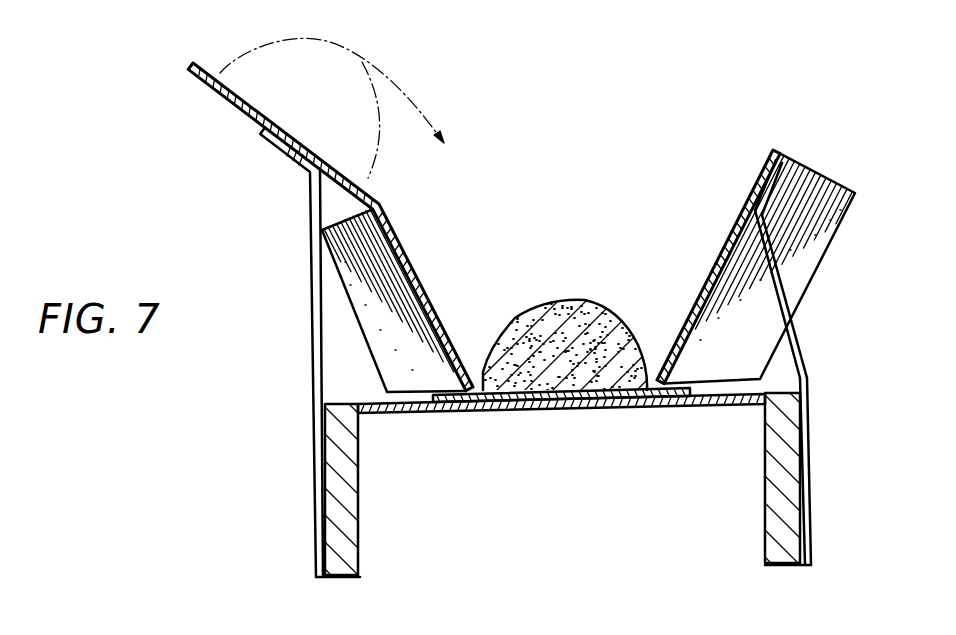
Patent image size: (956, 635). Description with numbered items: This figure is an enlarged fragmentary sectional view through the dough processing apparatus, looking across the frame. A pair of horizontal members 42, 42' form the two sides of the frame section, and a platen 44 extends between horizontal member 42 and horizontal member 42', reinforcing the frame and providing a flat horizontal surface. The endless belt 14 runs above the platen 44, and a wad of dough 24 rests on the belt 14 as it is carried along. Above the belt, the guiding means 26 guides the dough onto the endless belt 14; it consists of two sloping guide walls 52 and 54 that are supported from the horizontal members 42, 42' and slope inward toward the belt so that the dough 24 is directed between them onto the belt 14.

The endless belt 14 is at (443, 401).
The wads of dough 24 is at (602, 297).
The guiding means 26 is at (330, 307).
The horizontal member 42 is at (303, 491).
The horizontal member 42' is at (806, 376).
The platen 44 is at (577, 404).
The sloping guide wall 52 is at (768, 173).
The sloping guide wall 54 is at (405, 252).